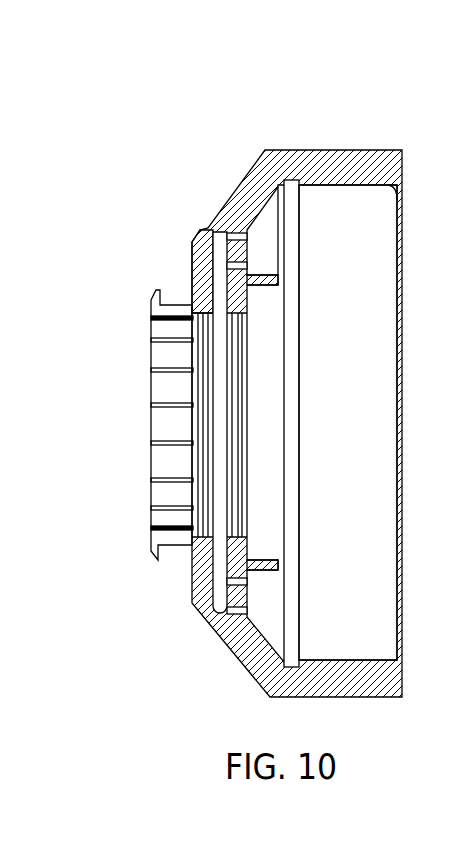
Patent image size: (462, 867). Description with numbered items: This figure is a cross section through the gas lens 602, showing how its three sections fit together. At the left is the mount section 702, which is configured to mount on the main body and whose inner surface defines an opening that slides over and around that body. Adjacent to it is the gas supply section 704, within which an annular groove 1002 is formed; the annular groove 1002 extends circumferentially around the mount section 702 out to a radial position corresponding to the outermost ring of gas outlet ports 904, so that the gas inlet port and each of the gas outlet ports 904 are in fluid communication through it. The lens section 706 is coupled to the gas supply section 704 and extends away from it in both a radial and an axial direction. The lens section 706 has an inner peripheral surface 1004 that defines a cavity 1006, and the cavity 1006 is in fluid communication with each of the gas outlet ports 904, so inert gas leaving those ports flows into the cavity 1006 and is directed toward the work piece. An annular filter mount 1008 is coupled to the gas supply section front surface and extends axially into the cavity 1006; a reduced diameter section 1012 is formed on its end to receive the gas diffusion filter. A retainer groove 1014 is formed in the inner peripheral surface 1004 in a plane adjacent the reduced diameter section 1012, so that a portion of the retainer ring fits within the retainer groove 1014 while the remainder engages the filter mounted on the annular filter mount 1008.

The gas lens 602 is at (161, 130).
The mount section 702 is at (151, 356).
The gas supply section 704 is at (192, 269).
The lens section 706 is at (362, 150).
The gas outlet ports 904 is at (247, 236).
The annular groove 1002 is at (216, 232).
The inner peripheral surface 1004 is at (395, 191).
The cavity 1006 is at (376, 447).
The annular filter mount 1008 is at (272, 288).
The reduced diameter section 1012 is at (279, 279).
The retainer groove 1014 is at (293, 180).